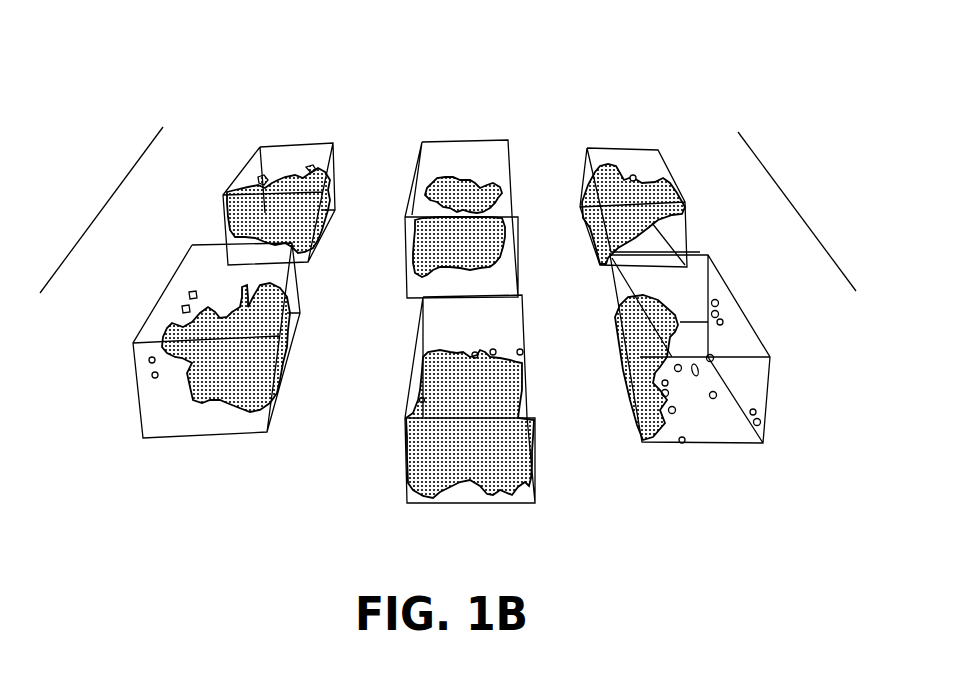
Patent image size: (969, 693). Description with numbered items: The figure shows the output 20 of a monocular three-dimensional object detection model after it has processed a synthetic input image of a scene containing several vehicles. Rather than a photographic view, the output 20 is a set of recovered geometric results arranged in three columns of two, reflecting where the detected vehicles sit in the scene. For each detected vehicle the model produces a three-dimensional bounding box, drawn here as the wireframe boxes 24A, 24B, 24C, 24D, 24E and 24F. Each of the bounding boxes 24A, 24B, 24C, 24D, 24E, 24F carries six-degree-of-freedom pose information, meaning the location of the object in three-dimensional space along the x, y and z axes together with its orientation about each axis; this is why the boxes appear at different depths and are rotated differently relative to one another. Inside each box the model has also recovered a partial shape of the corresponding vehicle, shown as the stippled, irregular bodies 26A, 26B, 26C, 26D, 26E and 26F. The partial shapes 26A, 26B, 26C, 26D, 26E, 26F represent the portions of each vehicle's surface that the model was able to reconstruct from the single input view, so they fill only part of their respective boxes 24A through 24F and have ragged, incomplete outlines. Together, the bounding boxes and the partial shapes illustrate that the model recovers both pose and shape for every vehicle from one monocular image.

The output 20 is at (735, 82).
The bounding box 24A is at (298, 140).
The bounding box 24B is at (140, 415).
The bounding box 24C is at (493, 140).
The bounding box 24D is at (407, 395).
The bounding box 24E is at (638, 148).
The bounding box 24F is at (720, 447).
The partial shape 26A is at (227, 217).
The partial shape 26B is at (207, 405).
The partial shape 26C is at (458, 175).
The partial shape 26D is at (460, 483).
The partial shape 26E is at (612, 167).
The partial shape 26F is at (670, 443).